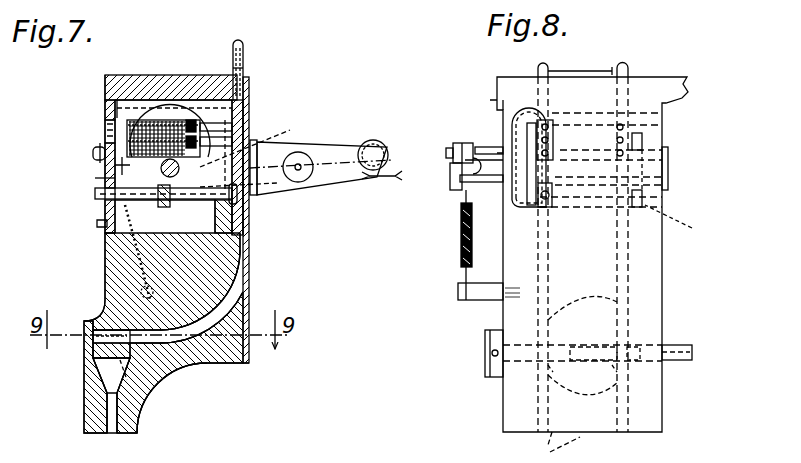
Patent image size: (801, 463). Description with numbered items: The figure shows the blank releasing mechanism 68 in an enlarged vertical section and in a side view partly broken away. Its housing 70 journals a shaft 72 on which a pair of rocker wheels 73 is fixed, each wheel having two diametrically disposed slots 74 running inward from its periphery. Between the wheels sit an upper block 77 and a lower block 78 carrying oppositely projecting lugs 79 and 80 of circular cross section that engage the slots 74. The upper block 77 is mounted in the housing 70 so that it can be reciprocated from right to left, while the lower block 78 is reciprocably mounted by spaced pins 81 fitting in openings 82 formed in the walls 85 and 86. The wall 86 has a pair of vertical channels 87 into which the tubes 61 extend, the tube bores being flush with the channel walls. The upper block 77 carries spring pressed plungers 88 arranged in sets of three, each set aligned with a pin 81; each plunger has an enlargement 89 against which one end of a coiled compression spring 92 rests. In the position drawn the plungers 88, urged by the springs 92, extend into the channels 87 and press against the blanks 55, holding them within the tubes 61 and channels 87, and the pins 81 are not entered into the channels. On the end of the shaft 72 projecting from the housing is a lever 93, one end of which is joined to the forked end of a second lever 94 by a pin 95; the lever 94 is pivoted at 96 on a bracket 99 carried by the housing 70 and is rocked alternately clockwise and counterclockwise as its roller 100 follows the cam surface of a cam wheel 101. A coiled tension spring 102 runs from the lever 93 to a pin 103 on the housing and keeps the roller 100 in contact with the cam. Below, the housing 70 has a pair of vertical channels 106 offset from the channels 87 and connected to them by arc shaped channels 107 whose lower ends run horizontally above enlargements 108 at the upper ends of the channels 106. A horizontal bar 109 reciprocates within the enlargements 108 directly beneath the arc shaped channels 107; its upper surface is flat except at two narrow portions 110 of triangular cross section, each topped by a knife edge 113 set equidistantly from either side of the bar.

In FIG. 7, the blank 55 is at (246, 72).
In FIG. 7, the tube 61 is at (244, 45).
In FIG. 8, the tube 61 is at (558, 71).
In FIG. 7, the blank releasing mechanism 68 is at (104, 108).
In FIG. 7, the housing 70 is at (105, 245).
In FIG. 8, the housing 70 is at (662, 322).
In FIG. 7, the shaft 72 is at (118, 167).
In FIG. 8, the shaft 72 is at (452, 163).
In FIG. 7, the rocker wheel 73 is at (100, 180).
In FIG. 8, the rocker wheel 73 is at (517, 150).
In FIG. 7, the slot 74 is at (228, 200).
In FIG. 8, the slot 74 is at (470, 145).
In FIG. 7, the upper block 77 is at (135, 105).
In FIG. 8, the upper block 77 is at (635, 127).
In FIG. 7, the lower block 78 is at (168, 202).
In FIG. 8, the lower block 78 is at (610, 205).
In FIG. 8, the lug 79 is at (538, 73).
In FIG. 7, the lug 80 is at (149, 206).
In FIG. 8, the lug 80 is at (455, 235).
In FIG. 7, the pin 81 is at (95, 194).
In FIG. 8, the pin 81 is at (553, 195).
In FIG. 7, the opening 82 is at (97, 224).
In FIG. 7, the wall 85 is at (93, 158).
In FIG. 7, the wall 86 is at (246, 232).
In FIG. 8, the wall 86 is at (503, 320).
In FIG. 7, the channel 87 is at (250, 225).
In FIG. 8, the channel 87 is at (625, 232).
In FIG. 7, the plunger 88 is at (215, 100).
In FIG. 8, the plunger 88 is at (620, 150).
In FIG. 7, the enlargement 89 is at (205, 100).
In FIG. 7, the coiled compression spring 92 is at (172, 78).
In FIG. 7, the lever 93 is at (112, 152).
In FIG. 8, the lever 93 is at (455, 150).
In FIG. 7, the second lever 94 is at (335, 160).
In FIG. 8, the second lever 94 is at (452, 162).
In FIG. 7, the pin 95 is at (292, 132).
In FIG. 8, the pin 95 is at (462, 178).
In FIG. 7, the pivot 96 is at (308, 172).
In FIG. 7, the bracket 99 is at (255, 150).
In FIG. 8, the bracket 99 is at (505, 150).
In FIG. 7, the roller 100 is at (380, 140).
In FIG. 8, the roller 100 is at (500, 145).
In FIG. 7, the cam wheel 101 is at (396, 180).
In FIG. 7, the coiled tension spring 102 is at (120, 275).
In FIG. 8, the coiled tension spring 102 is at (464, 267).
In FIG. 7, the pin 103 is at (215, 362).
In FIG. 8, the pin 103 is at (470, 290).
In FIG. 7, the channel 106 is at (110, 415).
In FIG. 8, the channel 106 is at (545, 447).
In FIG. 7, the arc shaped channel 107 is at (246, 300).
In FIG. 8, the arc shaped channel 107 is at (582, 322).
In FIG. 7, the enlargement 108 is at (100, 377).
In FIG. 8, the enlargement 108 is at (582, 395).
In FIG. 7, the bar 109 is at (93, 350).
In FIG. 8, the bar 109 is at (692, 352).
In FIG. 7, the triangular portion 110 is at (160, 368).
In FIG. 8, the triangular portion 110 is at (582, 377).
In FIG. 7, the knife edge 113 is at (100, 330).
In FIG. 8, the knife edge 113 is at (604, 340).